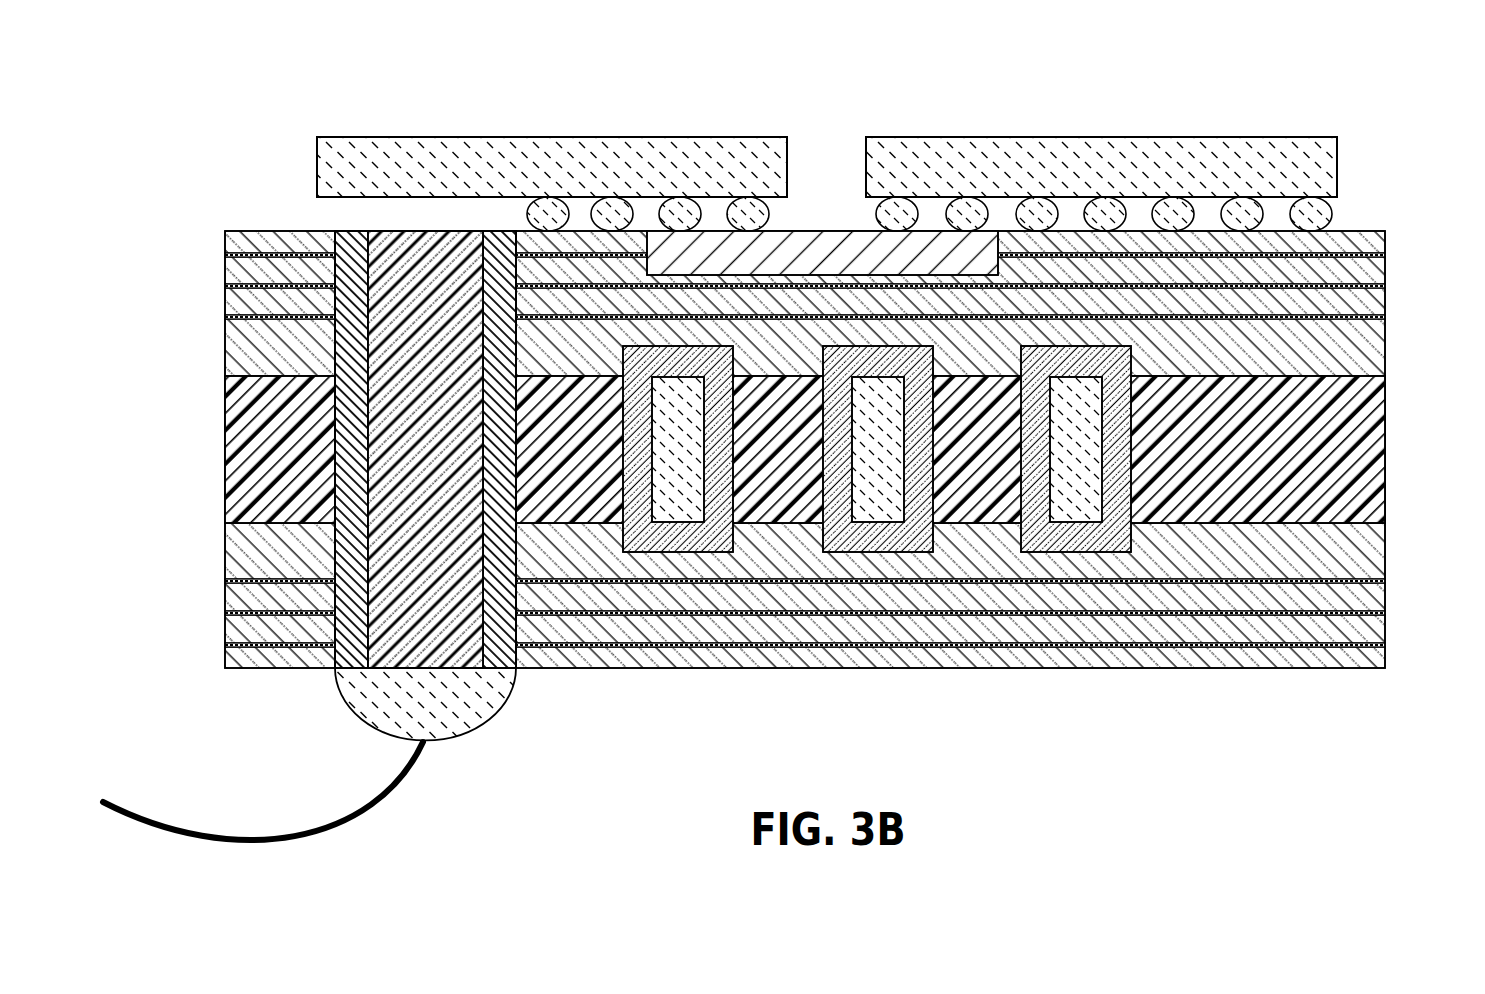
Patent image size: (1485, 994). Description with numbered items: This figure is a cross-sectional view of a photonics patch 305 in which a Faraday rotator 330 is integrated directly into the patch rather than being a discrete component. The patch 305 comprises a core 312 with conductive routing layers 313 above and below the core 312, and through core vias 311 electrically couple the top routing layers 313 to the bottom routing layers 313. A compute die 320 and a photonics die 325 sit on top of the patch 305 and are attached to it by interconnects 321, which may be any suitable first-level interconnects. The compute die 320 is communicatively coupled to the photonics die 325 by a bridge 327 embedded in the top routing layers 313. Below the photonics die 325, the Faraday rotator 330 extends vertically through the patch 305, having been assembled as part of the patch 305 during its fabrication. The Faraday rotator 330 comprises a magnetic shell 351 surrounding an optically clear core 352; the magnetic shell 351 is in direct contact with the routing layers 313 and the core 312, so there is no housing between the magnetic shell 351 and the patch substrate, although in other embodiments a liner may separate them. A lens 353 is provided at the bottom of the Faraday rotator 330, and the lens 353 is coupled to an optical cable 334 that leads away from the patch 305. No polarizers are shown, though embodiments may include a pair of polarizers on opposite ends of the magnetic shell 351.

The photonics patch 305 is at (1322, 68).
The through core vias 311 is at (1123, 438).
The core 312 is at (1367, 502).
The conductive routing layers 313 is at (1372, 235).
The compute die 320 is at (1142, 157).
The interconnects 321 is at (1327, 212).
The photonics die 325 is at (630, 150).
The bridge 327 is at (837, 250).
The Faraday rotator 330 is at (320, 443).
The optical cable 334 is at (350, 823).
The magnetic shell 351 is at (510, 463).
The optically clear core 352 is at (413, 567).
The lens 353 is at (460, 710).